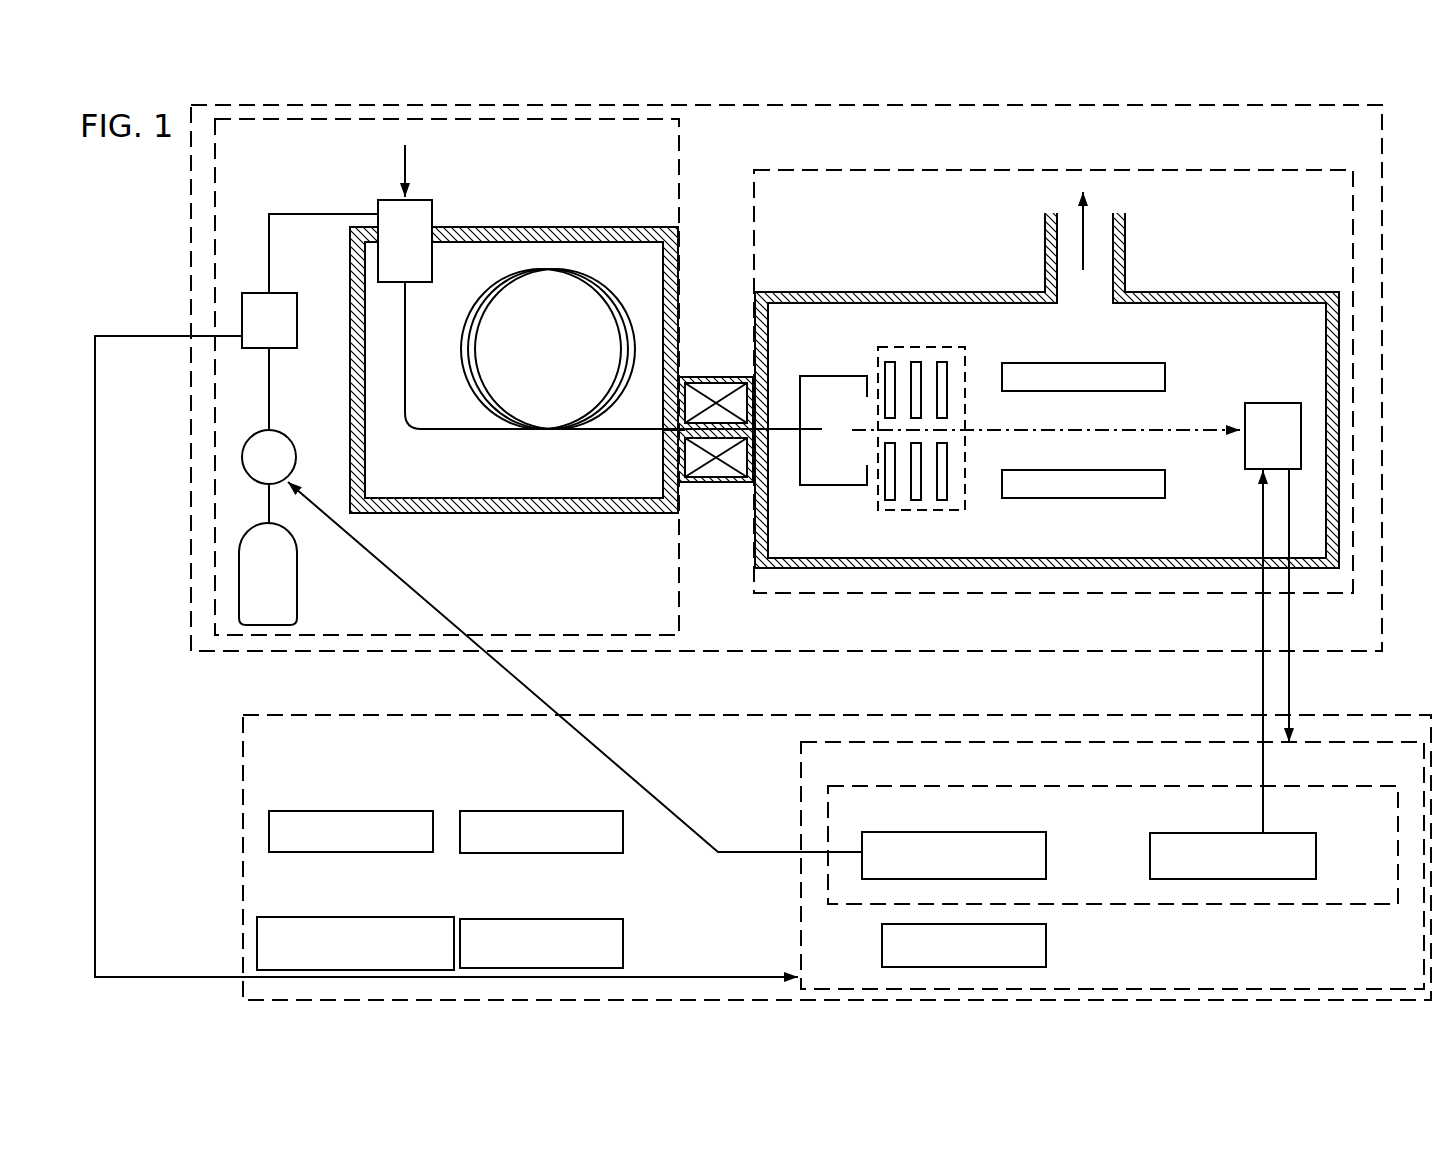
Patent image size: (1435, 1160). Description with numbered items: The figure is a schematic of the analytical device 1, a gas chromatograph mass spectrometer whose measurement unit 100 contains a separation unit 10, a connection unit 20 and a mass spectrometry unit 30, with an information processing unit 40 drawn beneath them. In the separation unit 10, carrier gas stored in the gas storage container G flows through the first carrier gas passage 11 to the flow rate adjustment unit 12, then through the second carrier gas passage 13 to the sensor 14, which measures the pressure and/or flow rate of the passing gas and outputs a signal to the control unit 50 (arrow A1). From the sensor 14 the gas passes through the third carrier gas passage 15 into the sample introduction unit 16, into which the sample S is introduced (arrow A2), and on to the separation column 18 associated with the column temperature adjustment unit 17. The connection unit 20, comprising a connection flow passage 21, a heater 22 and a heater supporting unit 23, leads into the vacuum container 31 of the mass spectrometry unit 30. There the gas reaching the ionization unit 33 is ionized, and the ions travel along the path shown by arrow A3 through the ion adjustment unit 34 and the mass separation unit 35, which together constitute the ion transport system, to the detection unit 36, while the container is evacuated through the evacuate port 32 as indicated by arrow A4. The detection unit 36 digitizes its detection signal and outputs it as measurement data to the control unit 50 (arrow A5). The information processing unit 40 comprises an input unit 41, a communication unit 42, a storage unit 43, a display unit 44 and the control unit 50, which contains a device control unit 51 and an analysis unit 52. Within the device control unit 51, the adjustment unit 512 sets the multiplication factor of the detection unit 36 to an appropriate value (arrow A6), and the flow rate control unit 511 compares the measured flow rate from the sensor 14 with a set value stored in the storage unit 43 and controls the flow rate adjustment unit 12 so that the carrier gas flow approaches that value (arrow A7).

The analytical device 1 is at (157, 688).
The measurement unit 100 is at (190, 651).
The separation unit 10 is at (665, 627).
The first carrier gas passage 11 is at (268, 510).
The flow rate adjustment unit 12 is at (270, 471).
The second carrier gas passage 13 is at (268, 385).
The sensor 14 is at (271, 340).
The third carrier gas passage 15 is at (289, 210).
The sample introduction unit 16 is at (425, 210).
The column temperature adjustment unit 17 is at (482, 227).
The separation column 18 is at (553, 268).
The connection unit 20 is at (700, 377).
The connection flow passage 21 is at (665, 440).
The heater 22 is at (705, 483).
The heater supporting unit 23 is at (740, 483).
The mass spectrometry unit 30 is at (840, 200).
The vacuum container 31 is at (785, 292).
The evacuate port 32 is at (1045, 217).
The ionization unit 33 is at (838, 375).
The ion adjustment unit 34 is at (915, 368).
The mass separation unit 35 is at (1017, 370).
The detection unit 36 is at (1275, 403).
The information processing unit 40 is at (247, 813).
The input unit 41 is at (300, 811).
The communication unit 42 is at (300, 917).
The storage unit 43 is at (490, 811).
The display unit 44 is at (490, 919).
The control unit 50 is at (817, 822).
The device control unit 51 is at (827, 890).
The flow rate control unit 511 is at (1047, 853).
The adjustment unit 512 is at (1317, 853).
The analysis unit 52 is at (1047, 945).
The gas storage container G is at (283, 608).
The sample S is at (405, 158).
The arrow A1 is at (110, 335).
The sample introduction A2 is at (400, 168).
The arrow A3 is at (1182, 430).
The arrow A4 is at (1090, 252).
The arrow A5 is at (1289, 688).
The arrow A6 is at (1263, 688).
The arrow A7 is at (446, 617).